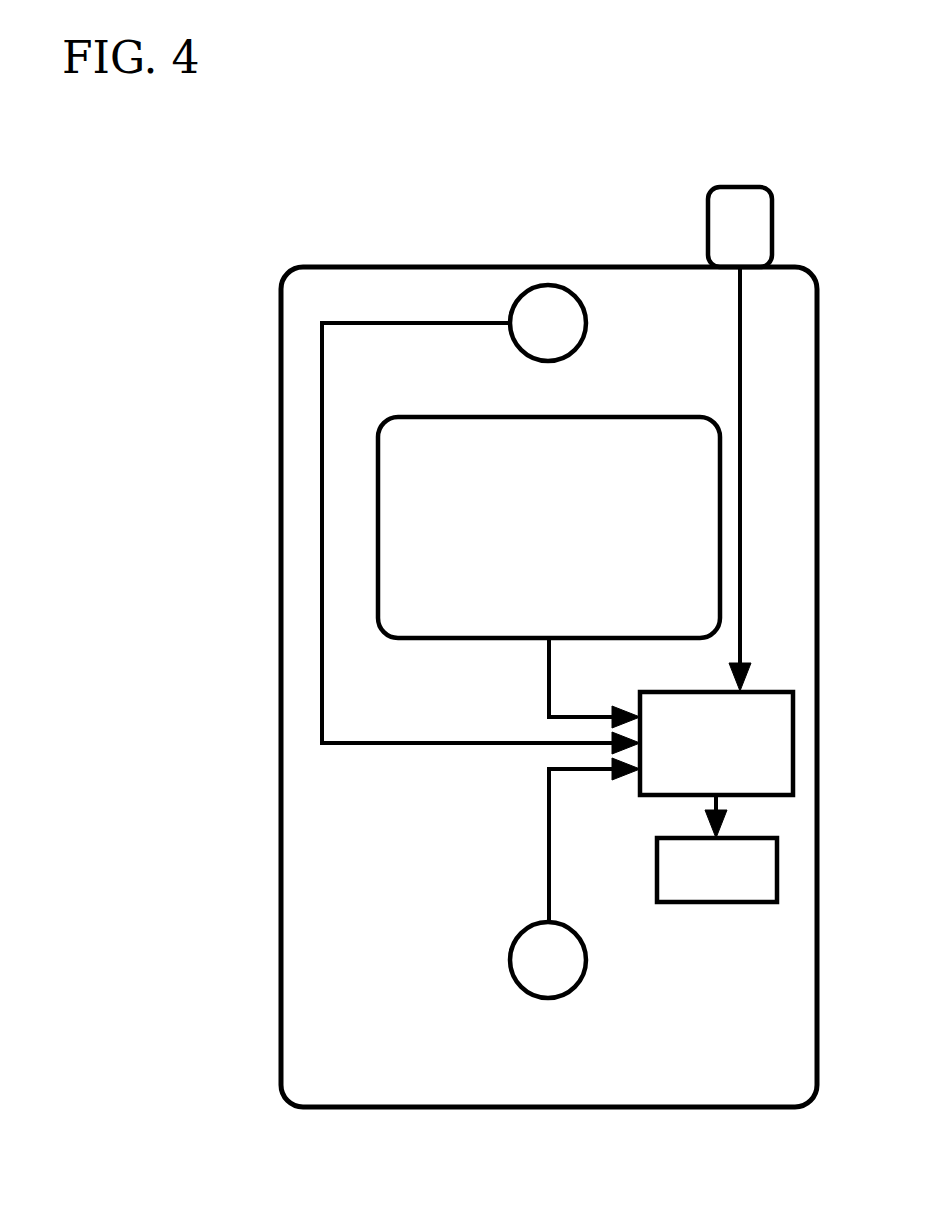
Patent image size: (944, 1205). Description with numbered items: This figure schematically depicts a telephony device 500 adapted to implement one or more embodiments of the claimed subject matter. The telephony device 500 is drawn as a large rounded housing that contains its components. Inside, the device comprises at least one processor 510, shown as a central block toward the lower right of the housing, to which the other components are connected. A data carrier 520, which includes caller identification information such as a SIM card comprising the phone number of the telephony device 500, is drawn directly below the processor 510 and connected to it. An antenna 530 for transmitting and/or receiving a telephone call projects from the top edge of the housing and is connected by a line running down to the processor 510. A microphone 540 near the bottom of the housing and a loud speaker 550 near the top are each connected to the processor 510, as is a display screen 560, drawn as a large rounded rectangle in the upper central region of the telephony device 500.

The telephony device 500 is at (572, 127).
The processor 510 is at (698, 756).
The data carrier 520 is at (698, 881).
The antenna 530 is at (721, 239).
The microphone 540 is at (529, 972).
The loud speaker 550 is at (529, 335).
The display screen 560 is at (530, 539).